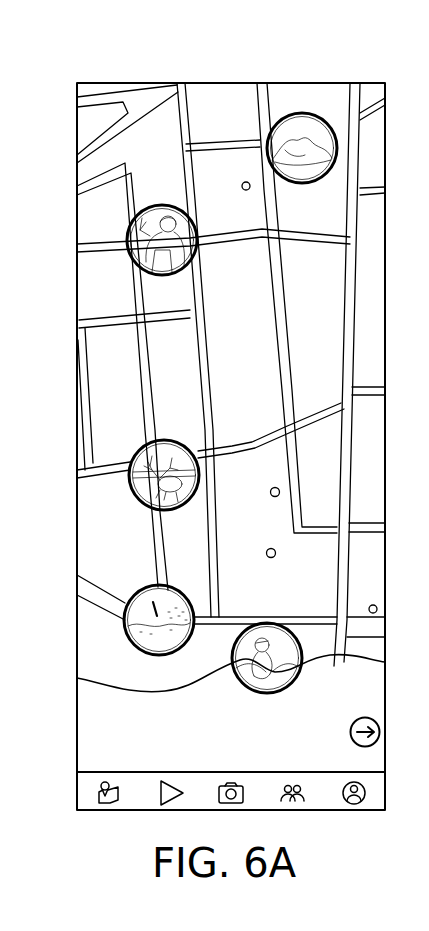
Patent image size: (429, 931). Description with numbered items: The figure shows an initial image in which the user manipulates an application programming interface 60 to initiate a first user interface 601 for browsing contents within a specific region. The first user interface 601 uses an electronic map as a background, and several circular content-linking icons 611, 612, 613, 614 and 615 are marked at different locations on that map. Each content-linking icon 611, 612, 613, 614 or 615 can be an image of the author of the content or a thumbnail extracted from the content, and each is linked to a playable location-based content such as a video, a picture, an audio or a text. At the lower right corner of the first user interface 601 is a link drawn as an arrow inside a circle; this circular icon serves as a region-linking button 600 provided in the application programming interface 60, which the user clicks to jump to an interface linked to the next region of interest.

The application programming interface 60 is at (230, 82).
The region-linking button 600 is at (349, 732).
The first user interface 601 is at (97, 161).
The content-linking icon 611 is at (162, 205).
The content-linking icon 612 is at (300, 112).
The content-linking icon 613 is at (180, 440).
The content-linking icon 614 is at (140, 588).
The content-linking icon 615 is at (267, 622).